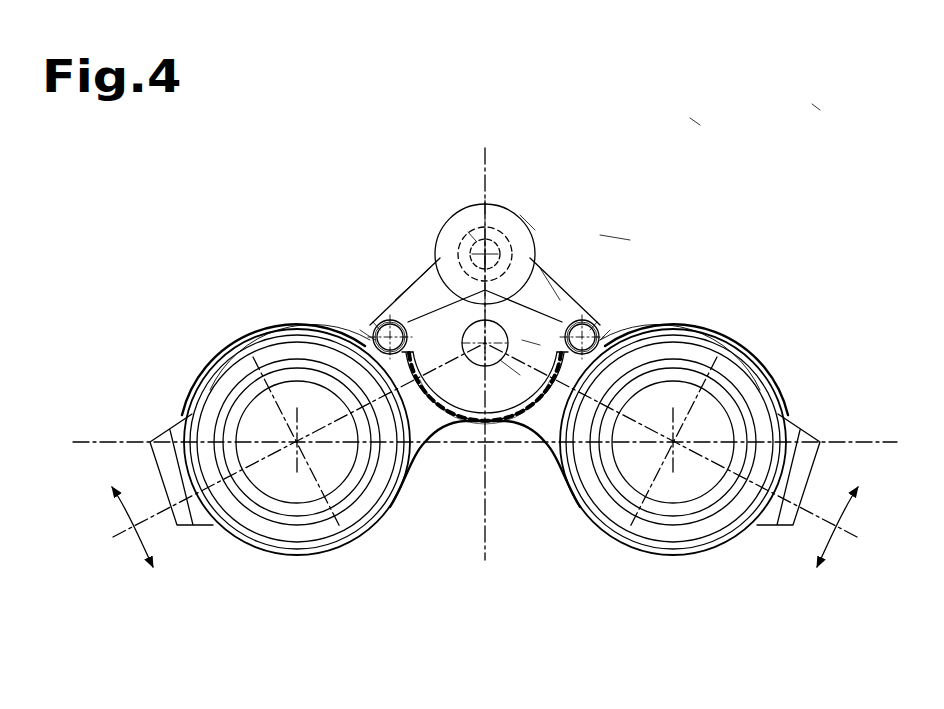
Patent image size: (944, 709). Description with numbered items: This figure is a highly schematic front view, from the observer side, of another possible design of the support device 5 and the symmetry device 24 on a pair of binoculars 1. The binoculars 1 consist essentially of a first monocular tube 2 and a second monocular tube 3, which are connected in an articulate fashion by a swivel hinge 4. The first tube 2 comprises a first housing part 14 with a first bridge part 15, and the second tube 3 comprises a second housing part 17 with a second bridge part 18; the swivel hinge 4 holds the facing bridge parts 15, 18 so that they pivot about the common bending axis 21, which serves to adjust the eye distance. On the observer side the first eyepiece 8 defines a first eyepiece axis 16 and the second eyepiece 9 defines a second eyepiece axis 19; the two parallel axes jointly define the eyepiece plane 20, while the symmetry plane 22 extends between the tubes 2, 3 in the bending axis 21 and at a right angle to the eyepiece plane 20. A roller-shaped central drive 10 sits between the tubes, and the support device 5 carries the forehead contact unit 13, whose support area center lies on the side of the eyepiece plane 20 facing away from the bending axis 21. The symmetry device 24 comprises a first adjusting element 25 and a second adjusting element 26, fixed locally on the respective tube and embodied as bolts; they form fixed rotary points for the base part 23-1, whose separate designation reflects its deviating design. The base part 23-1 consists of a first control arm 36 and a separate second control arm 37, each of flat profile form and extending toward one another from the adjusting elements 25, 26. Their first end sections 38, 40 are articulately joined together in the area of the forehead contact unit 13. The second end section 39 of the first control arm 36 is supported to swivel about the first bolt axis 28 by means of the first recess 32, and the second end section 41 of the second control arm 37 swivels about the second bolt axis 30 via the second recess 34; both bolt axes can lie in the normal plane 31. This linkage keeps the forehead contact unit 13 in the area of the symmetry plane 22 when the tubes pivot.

The binoculars 1 is at (815, 100).
The first monocular tube 2 is at (786, 351).
The second monocular tube 3 is at (204, 340).
The swivel hinge 4 is at (452, 428).
The support device 5 is at (690, 115).
The first eyepiece 8 is at (760, 565).
The second eyepiece 9 is at (277, 572).
The central drive 10 is at (508, 398).
The forehead contact unit 13 is at (513, 198).
The first housing part 14 is at (775, 368).
The first bridge part 15 is at (538, 415).
The first eyepiece axis 16 is at (682, 550).
The second housing part 17 is at (222, 361).
The second bridge part 18 is at (440, 440).
The second eyepiece axis 19 is at (240, 543).
The eyepiece plane 20 is at (103, 440).
The bending axis 21 is at (485, 343).
The symmetry plane 22 is at (480, 552).
The base part 23-1 is at (528, 217).
The symmetry device 24 is at (640, 231).
The first adjusting element 25 is at (606, 340).
The second adjusting element 26 is at (372, 328).
The first bolt axis 28 is at (600, 316).
The second bolt axis 30 is at (382, 320).
The normal plane 31 is at (524, 338).
The first recess 32 is at (606, 320).
The second recess 34 is at (366, 329).
The first control arm 36 is at (544, 300).
The second control arm 37 is at (414, 292).
The first end section of the first control arm 38 is at (495, 236).
The second end section of the first control arm 39 is at (643, 304).
The first end section of the second control arm 40 is at (472, 226).
The second end section of the second control arm 41 is at (360, 308).